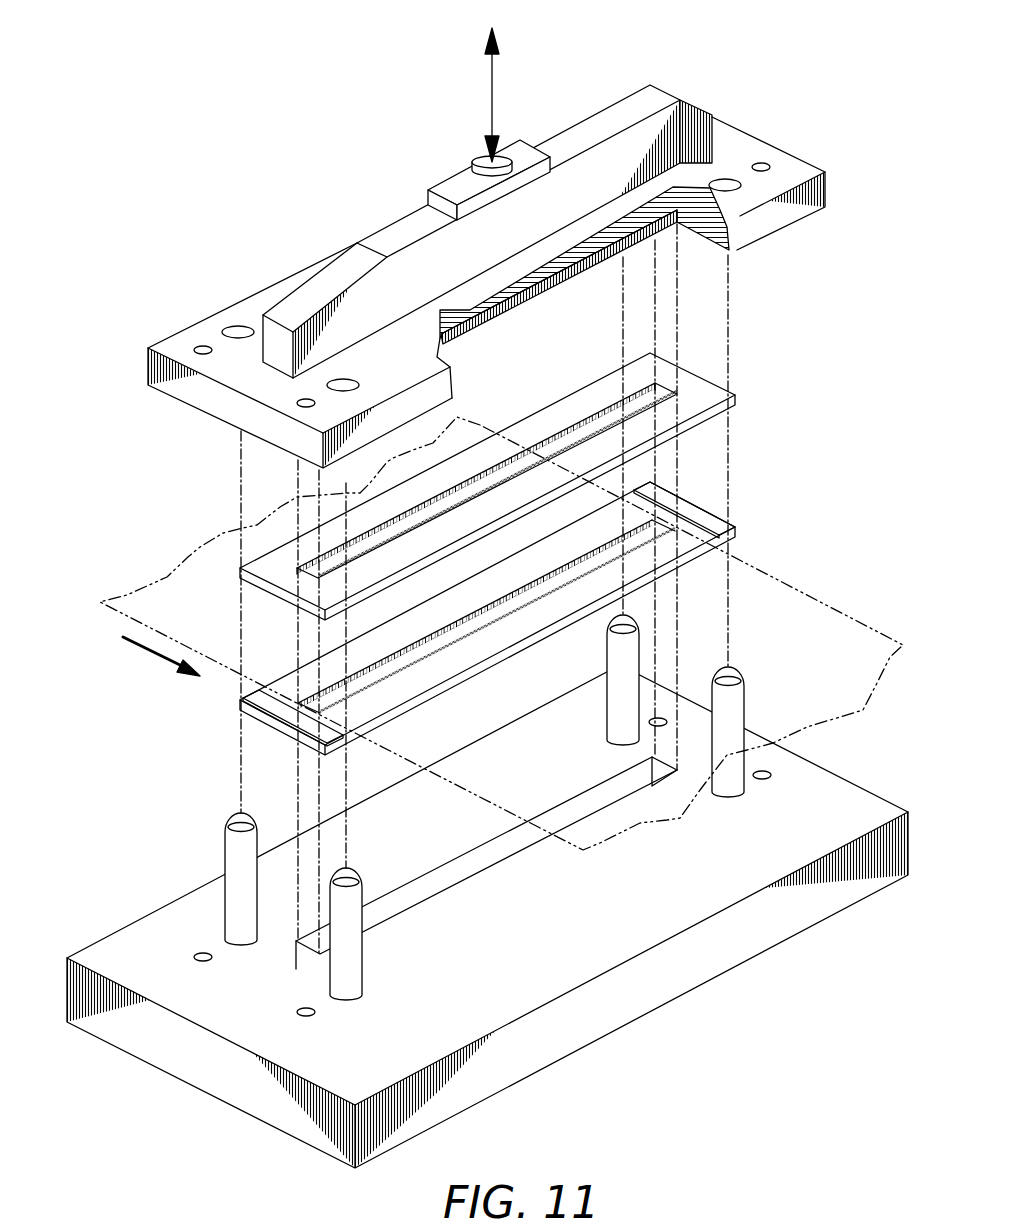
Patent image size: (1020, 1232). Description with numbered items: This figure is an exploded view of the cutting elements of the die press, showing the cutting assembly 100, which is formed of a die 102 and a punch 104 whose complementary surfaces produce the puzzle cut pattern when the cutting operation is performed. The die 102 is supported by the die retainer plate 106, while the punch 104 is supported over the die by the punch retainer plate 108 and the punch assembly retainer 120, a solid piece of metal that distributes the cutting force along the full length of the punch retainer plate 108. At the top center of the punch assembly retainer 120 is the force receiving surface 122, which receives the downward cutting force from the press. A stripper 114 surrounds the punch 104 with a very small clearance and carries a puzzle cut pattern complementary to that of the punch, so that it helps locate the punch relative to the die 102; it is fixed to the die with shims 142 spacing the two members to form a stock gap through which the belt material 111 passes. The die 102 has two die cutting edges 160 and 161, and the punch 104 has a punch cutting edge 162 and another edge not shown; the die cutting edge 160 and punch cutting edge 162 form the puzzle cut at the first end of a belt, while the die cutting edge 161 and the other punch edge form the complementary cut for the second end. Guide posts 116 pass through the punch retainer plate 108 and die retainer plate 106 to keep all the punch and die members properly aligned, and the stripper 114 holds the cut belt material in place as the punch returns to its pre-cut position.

The cutting assembly 100 is at (746, 45).
The die 102 is at (552, 582).
The punch 104 is at (563, 287).
The die retainer plate 106 is at (187, 920).
The punch retainer plate 108 is at (758, 223).
The belt material 111 is at (770, 575).
The stripper 114 is at (705, 397).
The guide posts 116 is at (238, 817).
The punch assembly retainer 120 is at (577, 143).
The force receiving surface 122 is at (477, 160).
The shims 142 is at (277, 707).
The die cutting edge 160 is at (450, 647).
The die cutting edge 161 is at (477, 613).
The punch cutting edge 162 is at (507, 313).